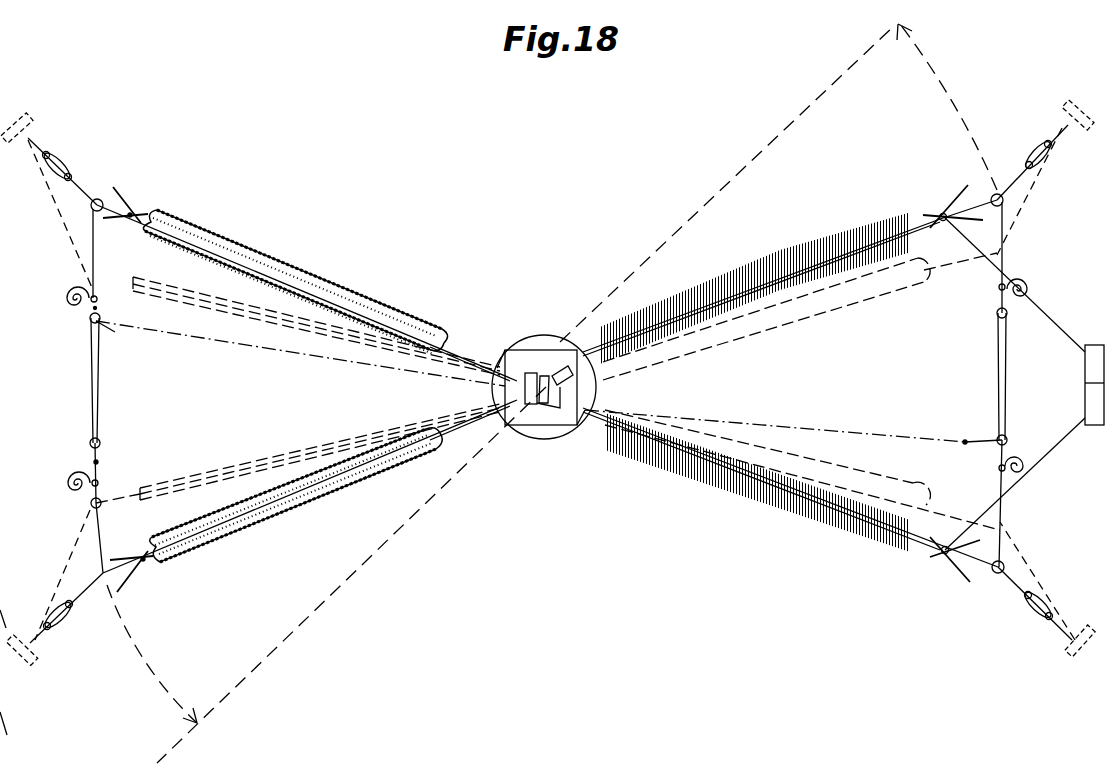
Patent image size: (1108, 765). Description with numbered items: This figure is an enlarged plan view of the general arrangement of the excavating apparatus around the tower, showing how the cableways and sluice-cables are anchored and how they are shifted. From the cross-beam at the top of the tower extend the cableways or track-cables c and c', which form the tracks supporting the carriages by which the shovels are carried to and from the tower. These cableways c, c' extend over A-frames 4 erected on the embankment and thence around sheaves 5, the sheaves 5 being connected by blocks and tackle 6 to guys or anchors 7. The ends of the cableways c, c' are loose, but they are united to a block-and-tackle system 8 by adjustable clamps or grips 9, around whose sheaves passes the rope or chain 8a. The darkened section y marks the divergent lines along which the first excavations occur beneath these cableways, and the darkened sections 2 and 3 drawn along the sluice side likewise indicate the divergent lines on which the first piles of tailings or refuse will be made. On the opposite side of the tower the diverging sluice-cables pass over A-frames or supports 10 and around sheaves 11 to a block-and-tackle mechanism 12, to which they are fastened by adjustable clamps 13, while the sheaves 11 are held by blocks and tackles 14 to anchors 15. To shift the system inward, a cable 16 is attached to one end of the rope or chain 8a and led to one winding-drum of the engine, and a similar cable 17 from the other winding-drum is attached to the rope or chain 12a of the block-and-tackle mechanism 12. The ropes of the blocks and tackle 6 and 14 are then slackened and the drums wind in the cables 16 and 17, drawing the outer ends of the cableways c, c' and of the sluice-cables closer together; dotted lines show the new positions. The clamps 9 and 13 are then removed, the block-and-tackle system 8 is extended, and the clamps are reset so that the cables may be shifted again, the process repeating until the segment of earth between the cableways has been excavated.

The upper rod 2 is at (263, 253).
The lower rod 3 is at (293, 513).
The A-frames 4 is at (943, 212).
The sheaves 5 is at (1006, 202).
The blocks and tackle 6 is at (1040, 149).
The guys or anchors 7 is at (1083, 110).
The block-and-tackle system 8 is at (999, 385).
The rope or chain 8a is at (977, 428).
The adjustable clamps or grips 9 is at (1000, 290).
The A-frames or supports 10 is at (122, 193).
The sheaves 11 is at (100, 212).
The block-and-tackle mechanism 12 is at (90, 368).
The rope or chain 12a is at (112, 322).
The adjustable clamps 13 is at (99, 300).
The blocks and tackles 14 is at (66, 164).
The anchors 15 is at (27, 140).
The cable 16 is at (815, 428).
The cable 17 is at (212, 333).
The cableway or track-cable c is at (790, 257).
The cableway or track-cable c' is at (790, 489).
The darkened section y is at (727, 292).